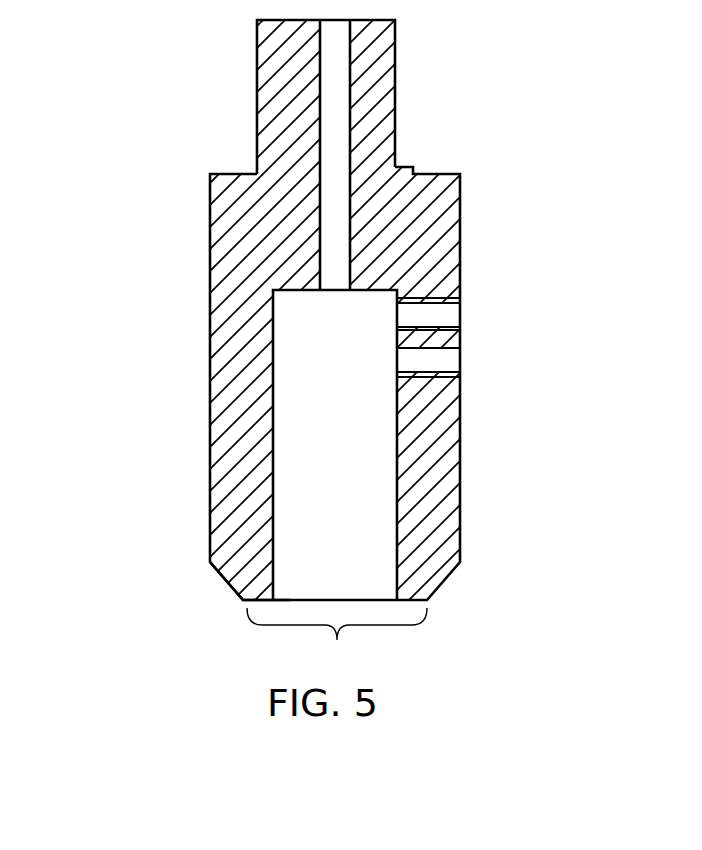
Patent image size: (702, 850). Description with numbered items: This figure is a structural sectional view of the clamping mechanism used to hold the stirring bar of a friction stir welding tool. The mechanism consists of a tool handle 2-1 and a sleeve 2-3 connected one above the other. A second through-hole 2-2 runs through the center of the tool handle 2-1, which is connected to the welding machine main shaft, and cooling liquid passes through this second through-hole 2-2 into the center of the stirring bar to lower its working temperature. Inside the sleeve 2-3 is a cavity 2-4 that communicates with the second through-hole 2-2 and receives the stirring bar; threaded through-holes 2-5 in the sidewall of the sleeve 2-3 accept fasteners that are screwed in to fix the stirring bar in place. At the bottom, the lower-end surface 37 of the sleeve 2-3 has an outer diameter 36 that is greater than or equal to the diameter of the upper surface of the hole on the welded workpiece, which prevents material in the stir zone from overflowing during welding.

The tool handle 2-1 is at (395, 97).
The second through-hole 2-2 is at (338, 133).
The sleeve 2-3 is at (247, 452).
The cavity 2-4 is at (352, 518).
The threaded through-hole 2-5 is at (442, 315).
The outer diameter of the lower-end surface of the sleeve 36 is at (337, 640).
The lower-end surface of the sleeve 37 is at (257, 603).